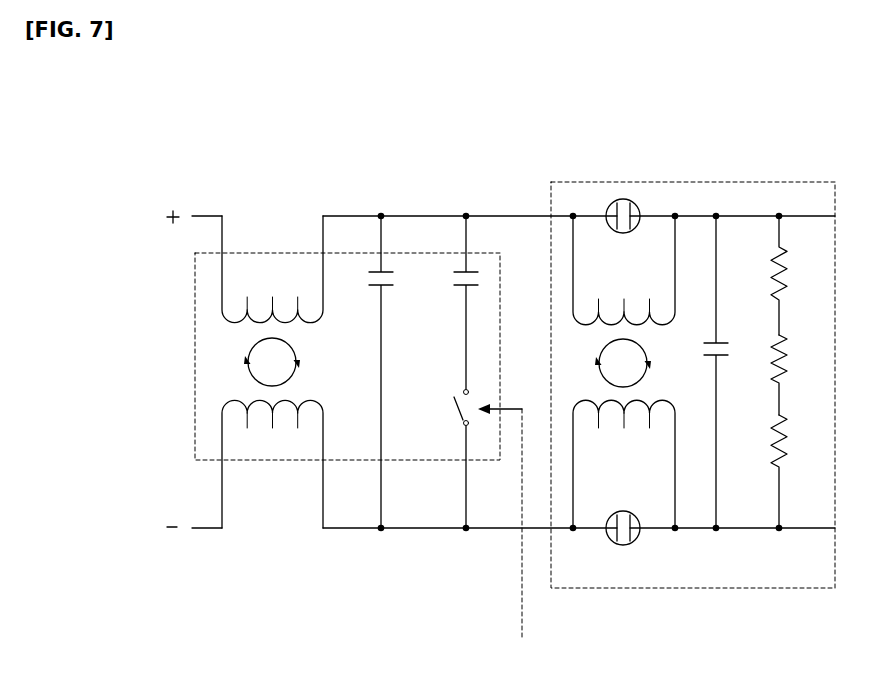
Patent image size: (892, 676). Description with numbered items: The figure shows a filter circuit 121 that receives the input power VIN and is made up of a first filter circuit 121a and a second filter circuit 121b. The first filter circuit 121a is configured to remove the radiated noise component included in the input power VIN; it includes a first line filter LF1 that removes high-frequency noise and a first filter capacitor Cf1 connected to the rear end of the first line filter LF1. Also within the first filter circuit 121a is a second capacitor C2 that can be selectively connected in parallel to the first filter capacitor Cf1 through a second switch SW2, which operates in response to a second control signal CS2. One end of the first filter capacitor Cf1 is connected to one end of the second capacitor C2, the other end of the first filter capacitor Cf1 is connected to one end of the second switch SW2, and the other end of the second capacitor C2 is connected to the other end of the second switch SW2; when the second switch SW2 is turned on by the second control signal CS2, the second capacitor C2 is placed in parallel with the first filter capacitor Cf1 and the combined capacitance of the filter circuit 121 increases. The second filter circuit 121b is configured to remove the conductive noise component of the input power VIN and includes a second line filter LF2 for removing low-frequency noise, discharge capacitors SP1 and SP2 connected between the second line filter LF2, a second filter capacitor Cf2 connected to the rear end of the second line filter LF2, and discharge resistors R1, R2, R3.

The filter circuit 121 is at (846, 100).
The first filter circuit 121a is at (259, 253).
The second filter circuit 121b is at (693, 182).
The input power VIN is at (153, 369).
The first line filter LF1 is at (272, 372).
The first filter capacitor Cf1 is at (369, 372).
The second capacitor C2 is at (455, 302).
The second switch SW2 is at (444, 459).
The second control signal CS2 is at (507, 509).
The discharge capacitor SP1 is at (623, 231).
The discharge capacitor SP2 is at (623, 543).
The second line filter LF2 is at (624, 372).
The second filter capacitor Cf2 is at (704, 372).
The discharge resistor R1 is at (792, 275).
The discharge resistor R2 is at (792, 375).
The discharge resistor R3 is at (792, 471).